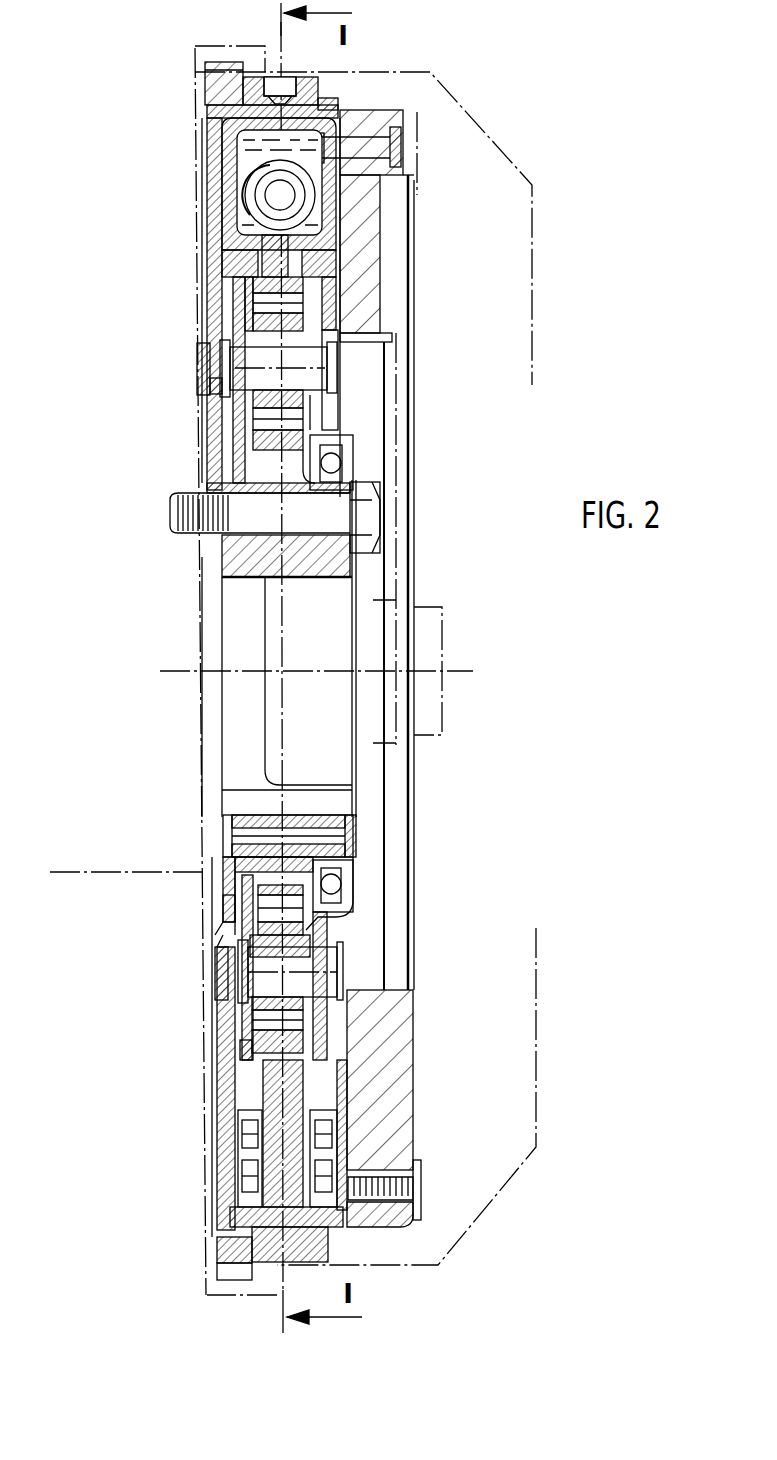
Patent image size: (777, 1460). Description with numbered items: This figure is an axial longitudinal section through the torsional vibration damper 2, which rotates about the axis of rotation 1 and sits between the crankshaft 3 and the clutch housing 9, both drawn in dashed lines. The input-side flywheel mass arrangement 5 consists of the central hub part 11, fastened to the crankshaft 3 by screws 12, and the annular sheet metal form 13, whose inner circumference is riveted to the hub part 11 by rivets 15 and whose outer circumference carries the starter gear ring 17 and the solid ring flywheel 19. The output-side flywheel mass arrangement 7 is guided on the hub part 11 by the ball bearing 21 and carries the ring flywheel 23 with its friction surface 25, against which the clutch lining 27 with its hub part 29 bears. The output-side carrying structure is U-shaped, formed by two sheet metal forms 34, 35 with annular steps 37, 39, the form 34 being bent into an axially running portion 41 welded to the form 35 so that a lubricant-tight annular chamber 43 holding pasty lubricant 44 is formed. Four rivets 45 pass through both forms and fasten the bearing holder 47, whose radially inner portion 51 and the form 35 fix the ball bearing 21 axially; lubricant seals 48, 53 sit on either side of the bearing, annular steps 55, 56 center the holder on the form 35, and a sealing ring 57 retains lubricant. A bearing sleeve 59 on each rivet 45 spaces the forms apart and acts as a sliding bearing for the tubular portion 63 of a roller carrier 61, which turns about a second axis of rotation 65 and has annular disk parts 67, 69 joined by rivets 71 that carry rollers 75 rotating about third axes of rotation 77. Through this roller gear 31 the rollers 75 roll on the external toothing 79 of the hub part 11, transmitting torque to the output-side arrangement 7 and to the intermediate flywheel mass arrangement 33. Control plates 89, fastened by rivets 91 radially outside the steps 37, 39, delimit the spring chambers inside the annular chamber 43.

The axis of rotation 1 is at (462, 671).
The torsional vibration damper 2 is at (170, 200).
The crankshaft 3 is at (64, 868).
The input-side flywheel mass arrangement 5 is at (198, 128).
The output-side flywheel mass arrangement 7 is at (350, 90).
The clutch housing 9 is at (478, 122).
The central hub part 11 is at (245, 568).
The screws 12 is at (172, 518).
The annular sheet metal form 13 is at (215, 452).
The rivets 15 is at (226, 832).
The starter gear ring 17 is at (210, 86).
The solid ring flywheel 19 is at (258, 80).
The ball bearing 21 is at (352, 908).
The ring flywheel 23 is at (385, 1172).
The friction surface 25 is at (406, 1132).
The clutch lining 27 is at (407, 1092).
The hub part 29 is at (445, 612).
The roller gear 31 is at (330, 372).
The intermediate flywheel mass arrangement 33 is at (238, 252).
The sheet metal form 34 is at (244, 1022).
The sheet metal form 35 is at (306, 1035).
The annular step 37 is at (265, 1078).
The annular step 39 is at (340, 1082).
The axially running portion 41 is at (272, 1280).
The annular chamber 43 is at (255, 146).
The pasty lubricant 44 is at (405, 158).
The rivets 45 is at (228, 345).
The bearing holder 47 is at (328, 1000).
The lubricant seal 48 is at (356, 838).
The portion 51 is at (315, 866).
The lubricant seal 53 is at (345, 888).
The annular step 55 is at (226, 905).
The annular step 56 is at (197, 915).
The sealing ring 57 is at (320, 948).
The bearing sleeve 59 is at (200, 362).
The roller carrier 61 is at (250, 405).
The tubular portion 63 is at (342, 425).
The second axis of rotation 65 is at (214, 385).
The annular disk part 67 is at (345, 360).
The annular disk part 69 is at (335, 320).
The rivets 71 is at (335, 288).
The roller 75 is at (338, 246).
The third axis of rotation 77 is at (246, 300).
The external toothing 79 is at (350, 452).
The control plates 89 is at (235, 1214).
The rivets 91 is at (240, 1136).